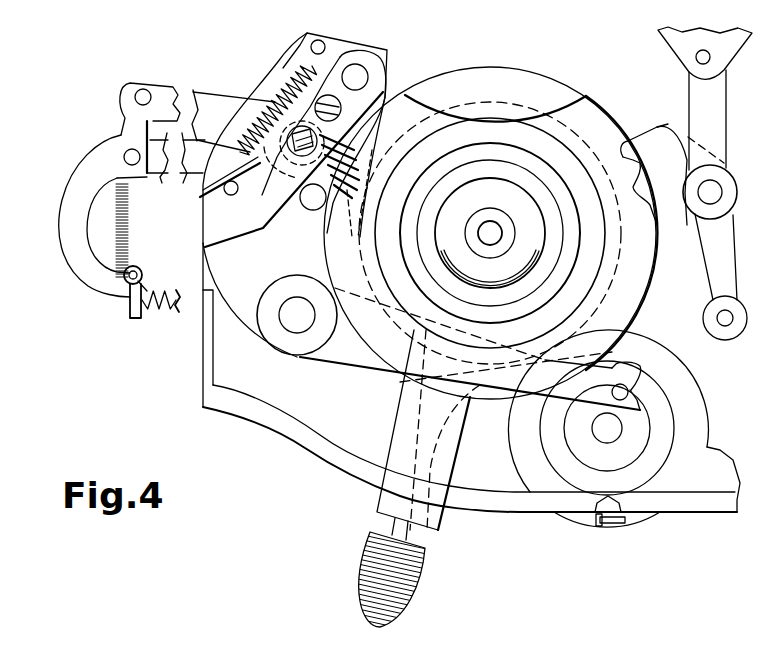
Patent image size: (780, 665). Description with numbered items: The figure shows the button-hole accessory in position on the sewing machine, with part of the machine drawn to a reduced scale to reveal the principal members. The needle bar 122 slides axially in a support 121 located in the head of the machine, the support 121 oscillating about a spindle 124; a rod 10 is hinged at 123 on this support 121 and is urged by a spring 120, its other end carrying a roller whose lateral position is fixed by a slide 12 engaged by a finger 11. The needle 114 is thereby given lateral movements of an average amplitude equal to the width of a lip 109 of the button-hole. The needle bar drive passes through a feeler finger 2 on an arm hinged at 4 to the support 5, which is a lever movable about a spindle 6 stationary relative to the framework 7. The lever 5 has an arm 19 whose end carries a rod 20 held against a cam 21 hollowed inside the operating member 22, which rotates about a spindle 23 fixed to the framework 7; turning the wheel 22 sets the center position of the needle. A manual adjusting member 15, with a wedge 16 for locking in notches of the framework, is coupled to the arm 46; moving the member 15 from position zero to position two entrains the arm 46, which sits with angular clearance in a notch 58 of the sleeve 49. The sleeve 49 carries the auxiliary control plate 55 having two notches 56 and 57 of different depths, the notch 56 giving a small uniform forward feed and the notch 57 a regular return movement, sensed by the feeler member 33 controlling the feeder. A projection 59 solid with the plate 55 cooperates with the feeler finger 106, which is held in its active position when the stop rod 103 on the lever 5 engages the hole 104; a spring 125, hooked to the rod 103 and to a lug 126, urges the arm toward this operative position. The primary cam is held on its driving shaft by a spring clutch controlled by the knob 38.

The feeler finger 2 is at (313, 197).
The hinge 4 is at (324, 141).
The support 5 is at (295, 220).
The spindle 6 is at (297, 315).
The framework 7 is at (168, 182).
The rod 10 is at (212, 105).
The finger 11 is at (298, 165).
The slide 12 is at (352, 183).
The manual adjusting member 15 is at (390, 583).
The wedge 16 is at (388, 520).
The arm 19 is at (470, 349).
The rod 20 is at (626, 385).
The cam 21 is at (644, 443).
The operating member 22 is at (640, 520).
The spindle 23 is at (602, 428).
The feeler member 33 is at (655, 142).
The knob 38 is at (490, 222).
The arm 46 is at (404, 415).
The sleeve 49 is at (574, 246).
The auxiliary control plate 55 is at (625, 143).
The notch 56 is at (622, 153).
The notch 57 is at (630, 196).
The notch 58 is at (396, 366).
The projection 59 is at (405, 95).
The stop rod 103 is at (238, 192).
The hole 104 is at (240, 198).
The feeler finger 106 is at (388, 124).
The lip 109 is at (130, 221).
The needle 114 is at (145, 276).
The spring 120 is at (150, 310).
The support 121 is at (94, 216).
The needle bar 122 is at (124, 271).
The hinge 123 is at (148, 89).
The spindle 124 is at (124, 157).
The spring 125 is at (286, 92).
The lug 126 is at (311, 46).